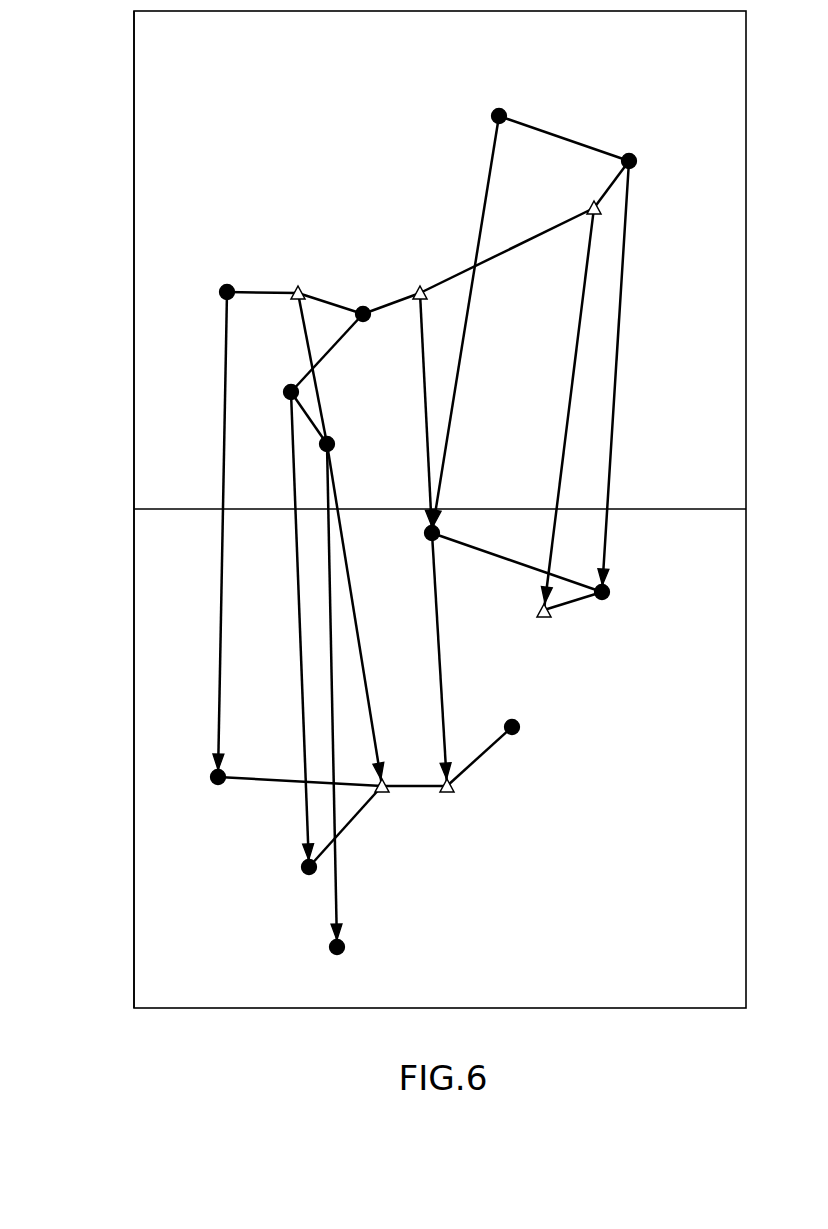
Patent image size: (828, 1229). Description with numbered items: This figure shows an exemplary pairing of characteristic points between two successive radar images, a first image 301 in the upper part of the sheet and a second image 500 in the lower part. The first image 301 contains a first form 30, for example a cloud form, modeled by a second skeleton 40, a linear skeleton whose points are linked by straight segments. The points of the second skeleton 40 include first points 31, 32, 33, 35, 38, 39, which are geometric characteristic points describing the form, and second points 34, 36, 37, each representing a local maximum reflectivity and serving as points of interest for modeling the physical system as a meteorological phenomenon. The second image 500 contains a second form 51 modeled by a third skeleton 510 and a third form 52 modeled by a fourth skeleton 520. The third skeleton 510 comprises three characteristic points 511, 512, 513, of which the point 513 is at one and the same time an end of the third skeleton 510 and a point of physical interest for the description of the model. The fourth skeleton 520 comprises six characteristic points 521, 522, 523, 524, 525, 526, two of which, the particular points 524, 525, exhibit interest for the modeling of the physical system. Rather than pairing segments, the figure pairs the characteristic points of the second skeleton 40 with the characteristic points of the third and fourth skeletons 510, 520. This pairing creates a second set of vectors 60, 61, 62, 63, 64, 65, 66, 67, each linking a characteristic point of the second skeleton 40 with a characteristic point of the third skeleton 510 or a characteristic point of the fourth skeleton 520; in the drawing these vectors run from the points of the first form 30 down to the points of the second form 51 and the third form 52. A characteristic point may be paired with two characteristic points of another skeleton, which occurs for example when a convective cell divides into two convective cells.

The first image 301 is at (134, 258).
The second image 500 is at (134, 772).
The first form 30 is at (237, 222).
The first point 31 is at (321, 449).
The first point 32 is at (284, 391).
The first point 33 is at (227, 285).
The second point 34 is at (298, 286).
The first point 35 is at (363, 307).
The second point 36 is at (420, 286).
The second point 37 is at (600, 208).
The first point 38 is at (630, 154).
The first point 39 is at (500, 108).
The second skeleton 40 is at (537, 233).
The vector 60 is at (190, 627).
The vector 61 is at (262, 617).
The vector 62 is at (297, 553).
The vector 63 is at (355, 577).
The vector 64 is at (390, 451).
The vector 65 is at (457, 438).
The vector 66 is at (535, 401).
The vector 67 is at (575, 419).
The second form 51 is at (642, 560).
The third skeleton 510 is at (489, 552).
The characteristic point 511 is at (424, 531).
The characteristic point 512 is at (610, 591).
The characteristic point 513 is at (543, 618).
The third form 52 is at (428, 935).
The fourth skeleton 520 is at (343, 840).
The characteristic point 521 is at (330, 947).
The characteristic point 522 is at (301, 868).
The characteristic point 523 is at (214, 772).
The particular point 524 is at (381, 778).
The particular point 525 is at (455, 792).
The characteristic point 526 is at (520, 724).